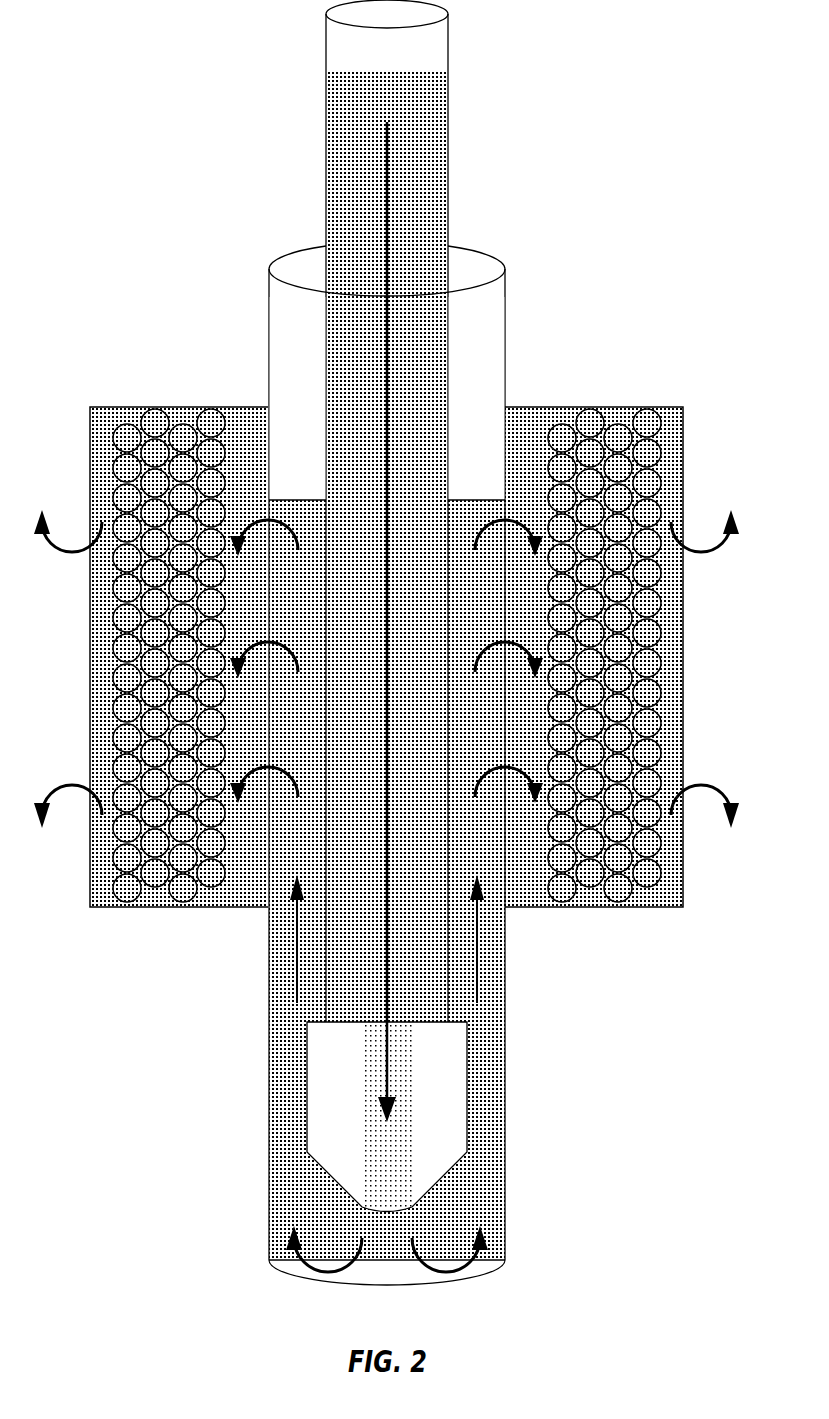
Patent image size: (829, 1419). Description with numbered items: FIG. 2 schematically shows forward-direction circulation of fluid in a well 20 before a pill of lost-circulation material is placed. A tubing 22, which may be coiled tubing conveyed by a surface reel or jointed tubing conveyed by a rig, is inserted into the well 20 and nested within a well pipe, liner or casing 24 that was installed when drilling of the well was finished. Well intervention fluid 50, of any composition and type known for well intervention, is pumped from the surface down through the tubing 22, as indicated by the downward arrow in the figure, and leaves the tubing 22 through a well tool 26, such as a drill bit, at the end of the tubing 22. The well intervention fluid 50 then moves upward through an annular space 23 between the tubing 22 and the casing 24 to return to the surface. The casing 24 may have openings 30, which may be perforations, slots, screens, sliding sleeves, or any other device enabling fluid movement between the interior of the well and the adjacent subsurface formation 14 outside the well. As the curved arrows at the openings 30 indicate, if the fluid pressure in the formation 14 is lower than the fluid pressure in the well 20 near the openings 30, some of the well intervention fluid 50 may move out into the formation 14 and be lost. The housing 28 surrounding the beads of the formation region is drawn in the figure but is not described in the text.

The subsurface formation 14 is at (157, 423).
The well 20 is at (612, 246).
The tubing 22 is at (381, 511).
The annular space 23 is at (490, 327).
The casing 24 is at (268, 300).
The well tool 26 is at (467, 1112).
The bed housing 28 is at (128, 908).
The openings 30 is at (272, 542).
The well intervention fluid 50 is at (435, 110).